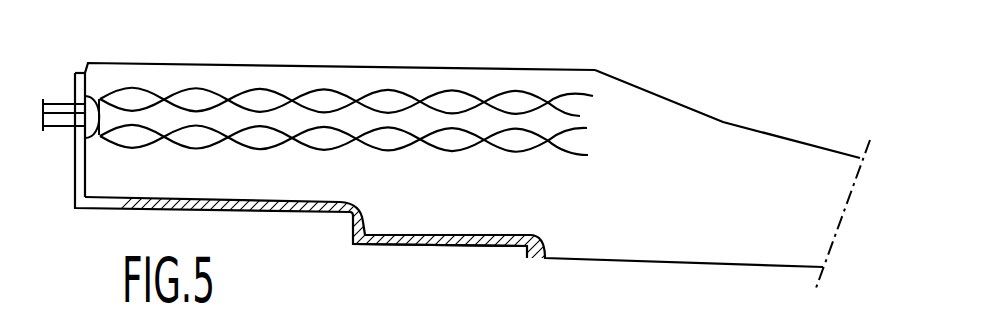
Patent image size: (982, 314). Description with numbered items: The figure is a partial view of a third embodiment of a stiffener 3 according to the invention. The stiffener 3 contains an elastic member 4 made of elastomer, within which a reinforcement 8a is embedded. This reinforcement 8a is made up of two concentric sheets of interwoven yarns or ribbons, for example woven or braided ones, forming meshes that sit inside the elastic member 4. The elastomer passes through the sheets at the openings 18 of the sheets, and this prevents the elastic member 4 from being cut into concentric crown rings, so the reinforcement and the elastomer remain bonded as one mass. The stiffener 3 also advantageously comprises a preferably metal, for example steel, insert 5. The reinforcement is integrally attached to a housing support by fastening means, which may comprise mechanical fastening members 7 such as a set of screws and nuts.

The stiffener 3 is at (465, 156).
The elastic member 4 is at (727, 122).
The insert 5 is at (456, 247).
The mechanical fastening members 7 is at (58, 104).
The reinforcement 8a is at (346, 132).
The openings 18 is at (255, 97).